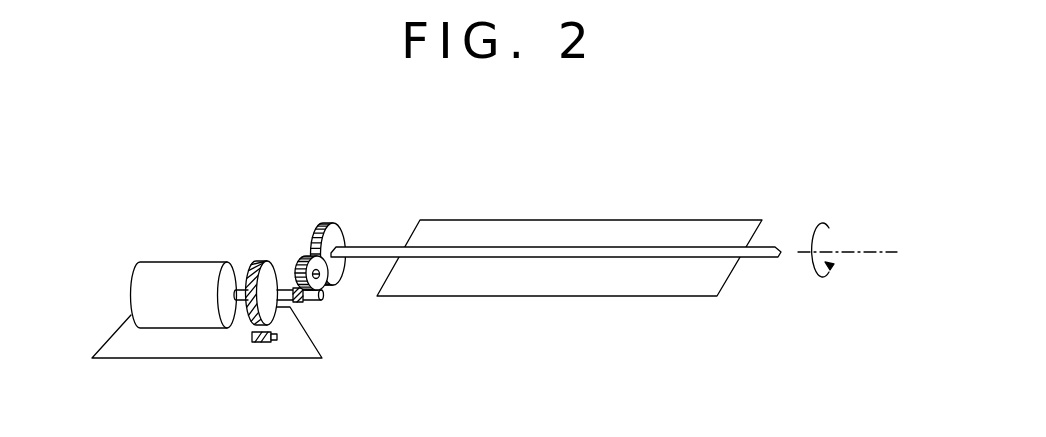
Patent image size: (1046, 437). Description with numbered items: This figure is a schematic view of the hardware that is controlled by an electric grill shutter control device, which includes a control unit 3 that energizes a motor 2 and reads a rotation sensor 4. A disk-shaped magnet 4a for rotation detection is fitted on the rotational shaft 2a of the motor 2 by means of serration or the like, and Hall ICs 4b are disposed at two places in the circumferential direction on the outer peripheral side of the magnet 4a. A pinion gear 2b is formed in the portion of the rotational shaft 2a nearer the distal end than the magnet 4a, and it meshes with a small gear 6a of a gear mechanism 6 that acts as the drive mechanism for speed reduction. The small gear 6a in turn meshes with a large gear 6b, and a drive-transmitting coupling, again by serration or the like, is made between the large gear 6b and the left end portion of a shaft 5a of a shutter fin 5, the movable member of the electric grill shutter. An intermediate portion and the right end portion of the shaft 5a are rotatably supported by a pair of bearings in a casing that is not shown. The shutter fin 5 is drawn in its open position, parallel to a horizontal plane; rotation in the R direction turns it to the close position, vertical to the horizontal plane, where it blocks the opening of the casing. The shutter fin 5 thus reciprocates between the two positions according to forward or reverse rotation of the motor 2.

The motor 2 is at (180, 262).
The rotational shaft 2a is at (241, 288).
The pinion gear 2b is at (306, 303).
The control unit 3 is at (135, 361).
The rotation sensor 4 is at (260, 203).
The magnet 4a is at (262, 261).
The Hall ICs 4b is at (258, 343).
The shutter fin 5 is at (669, 286).
The shaft 5a is at (378, 247).
The gear mechanism 6 is at (325, 207).
The small gear 6a is at (310, 231).
The large gear 6b is at (336, 223).
The R direction R is at (847, 243).